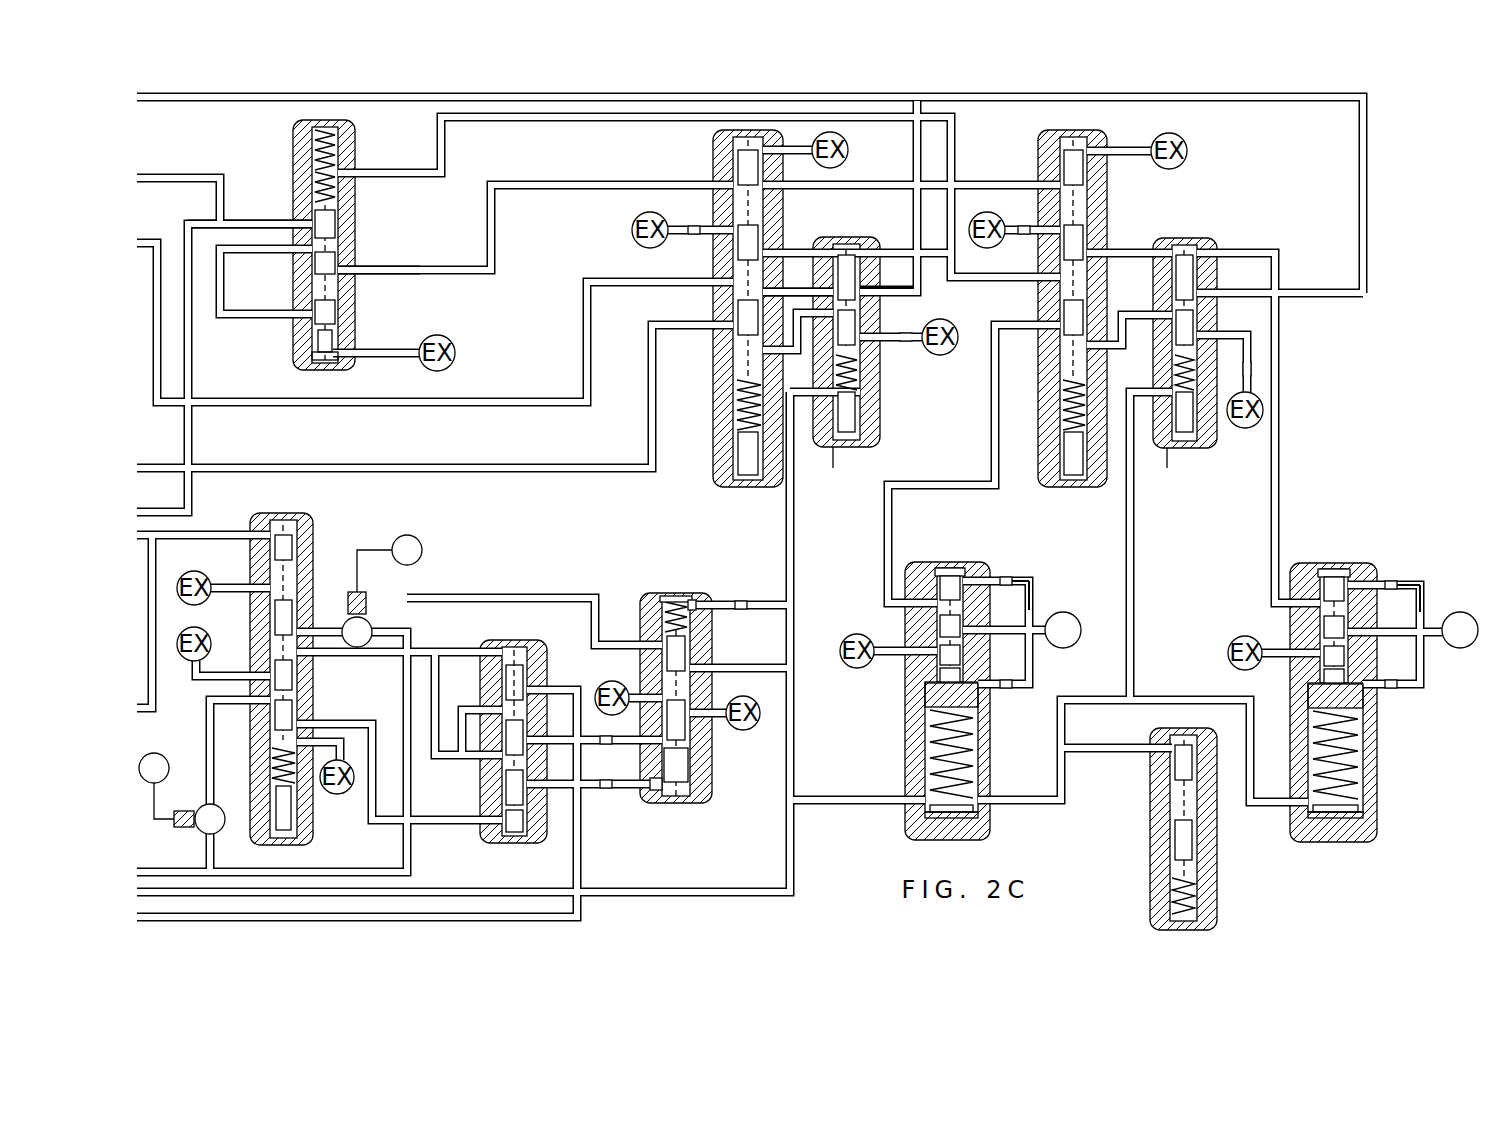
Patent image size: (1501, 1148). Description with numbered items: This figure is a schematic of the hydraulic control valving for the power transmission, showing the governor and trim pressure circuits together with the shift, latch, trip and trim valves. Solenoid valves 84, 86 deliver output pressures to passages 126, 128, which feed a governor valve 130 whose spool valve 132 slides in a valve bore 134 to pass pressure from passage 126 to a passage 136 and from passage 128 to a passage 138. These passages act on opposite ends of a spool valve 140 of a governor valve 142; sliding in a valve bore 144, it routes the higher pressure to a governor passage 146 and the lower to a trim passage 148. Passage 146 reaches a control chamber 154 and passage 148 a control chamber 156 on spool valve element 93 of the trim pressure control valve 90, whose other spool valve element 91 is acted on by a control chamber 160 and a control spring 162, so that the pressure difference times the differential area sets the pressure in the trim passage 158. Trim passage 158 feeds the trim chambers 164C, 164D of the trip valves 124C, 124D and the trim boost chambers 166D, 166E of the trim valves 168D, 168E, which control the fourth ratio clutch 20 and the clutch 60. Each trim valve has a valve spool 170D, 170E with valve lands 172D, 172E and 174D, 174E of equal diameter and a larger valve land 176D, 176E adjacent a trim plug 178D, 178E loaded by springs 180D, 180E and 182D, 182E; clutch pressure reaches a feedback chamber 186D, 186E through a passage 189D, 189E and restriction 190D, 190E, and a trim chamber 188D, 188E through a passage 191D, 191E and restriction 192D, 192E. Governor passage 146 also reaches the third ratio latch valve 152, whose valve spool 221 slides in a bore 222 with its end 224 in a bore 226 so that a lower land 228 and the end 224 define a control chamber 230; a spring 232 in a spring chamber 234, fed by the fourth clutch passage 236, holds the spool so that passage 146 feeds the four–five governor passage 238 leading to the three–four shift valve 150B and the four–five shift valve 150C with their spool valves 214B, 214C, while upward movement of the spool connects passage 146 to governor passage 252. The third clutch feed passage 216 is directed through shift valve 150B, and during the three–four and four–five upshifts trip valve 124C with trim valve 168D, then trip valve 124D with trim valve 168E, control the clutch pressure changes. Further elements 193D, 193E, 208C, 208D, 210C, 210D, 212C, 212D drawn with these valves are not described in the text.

The fourth ratio clutch 20 is at (1080, 628).
The clutch 60 is at (1462, 650).
The solenoid valve 84 is at (372, 628).
The solenoid valve 86 is at (222, 830).
The trim pressure control valve 90 is at (680, 596).
The spool valve element 91 is at (664, 620).
The spool valve element 93 is at (705, 770).
The trip valve 124C is at (882, 425).
The trip valve 124D is at (1217, 432).
The passage 126 is at (322, 626).
The passage 128 is at (226, 708).
The governor valve 130 is at (300, 838).
The spool valve 132 is at (287, 692).
The valve bore 134 is at (278, 533).
The passage 136 is at (330, 660).
The passage 138 is at (365, 745).
The spool valve 140 is at (552, 680).
The governor valve 142 is at (508, 845).
The valve bore 144 is at (508, 662).
The governor passage 146 is at (178, 176).
The trim passage 148 is at (560, 734).
The 3–4 shift valve 150B is at (712, 432).
The 4–5 shift valve 150C is at (1115, 213).
The third ratio latch valve 152 is at (290, 348).
The control chamber 154 is at (648, 792).
The control chamber 156 is at (700, 752).
The trim passage 158 is at (788, 630).
The control chamber 160 is at (692, 606).
The control spring 162 is at (674, 606).
The trim chamber 164C is at (835, 469).
The trim chamber 164D is at (1167, 470).
The trim boost chamber 166D is at (928, 770).
The trim boost chamber 166E is at (1362, 786).
The trim valve 168D is at (905, 818).
The trim valve 168E is at (1385, 822).
The valve spool 170D is at (945, 575).
The valve spool 170E is at (1328, 575).
The valve land 172D is at (936, 590).
The valve land 172E is at (1322, 586).
The valve land 174D is at (936, 640).
The valve land 174E is at (1322, 632).
The valve land 176D is at (936, 660).
The valve land 176E is at (1322, 660).
The trim plug 178D is at (936, 690).
The trim plug 178E is at (1308, 686).
The spring 180D is at (965, 818).
The spring 180E is at (1342, 818).
The spring 182D is at (945, 815).
The spring 182E is at (1320, 818).
The feedback chamber 186D is at (962, 576).
The feedback chamber 186E is at (1336, 577).
The trim chamber 188D is at (986, 704).
The trim chamber 188E is at (1372, 702).
The passage 189D is at (1030, 584).
The passage 189E is at (1412, 585).
The restriction 190D is at (1004, 576).
The restriction 190E is at (1392, 580).
The passage 191D is at (1033, 668).
The passage 191E is at (1422, 670).
The restriction 192D is at (1012, 690).
The restriction 192E is at (1398, 690).
The passage 193D is at (1036, 608).
The passage 193E is at (1424, 590).
The line 208C is at (898, 302).
The line 208D is at (1190, 305).
The spring 210C is at (866, 362).
The spring 210D is at (1208, 372).
The orifice 212C is at (906, 346).
The orifice 212D is at (1252, 370).
The spool valve 214B is at (737, 207).
The spool valve 214C is at (1084, 250).
The third clutch feed passage 216 is at (532, 408).
The valve spool 221 is at (342, 262).
The bore 222 is at (350, 290).
The end 224 is at (292, 325).
The bore 226 is at (320, 352).
The lower land 228 is at (305, 292).
The control chamber 230 is at (340, 316).
The spring 232 is at (345, 153).
The spring chamber 234 is at (340, 196).
The fourth clutch passage 236 is at (446, 148).
The 4–5 governor passage 238 is at (494, 238).
The governor passage 252 is at (262, 222).